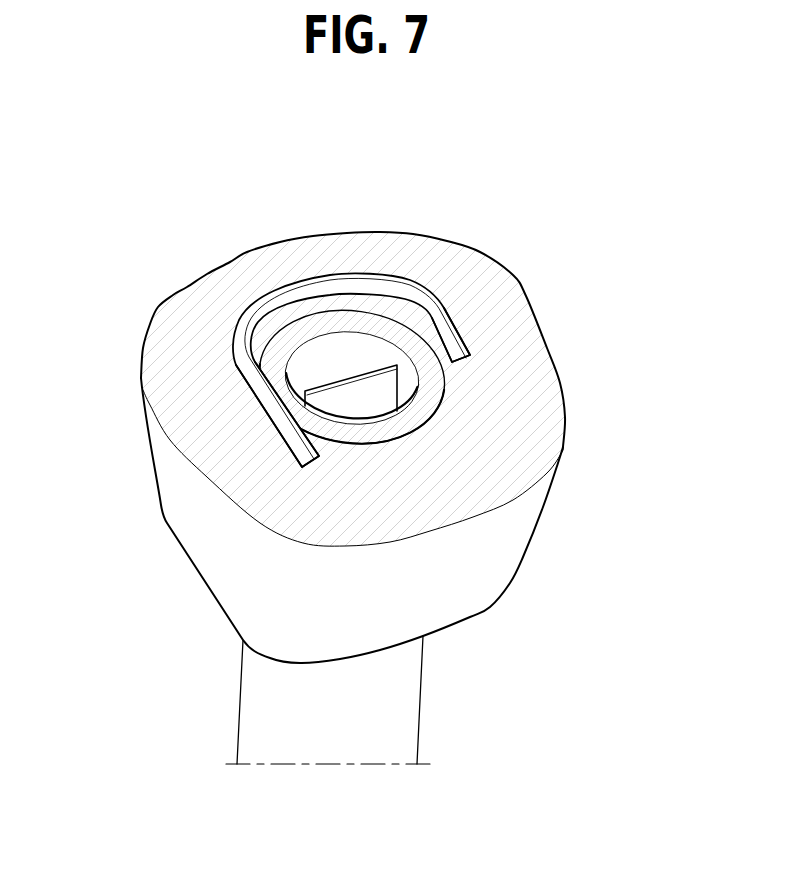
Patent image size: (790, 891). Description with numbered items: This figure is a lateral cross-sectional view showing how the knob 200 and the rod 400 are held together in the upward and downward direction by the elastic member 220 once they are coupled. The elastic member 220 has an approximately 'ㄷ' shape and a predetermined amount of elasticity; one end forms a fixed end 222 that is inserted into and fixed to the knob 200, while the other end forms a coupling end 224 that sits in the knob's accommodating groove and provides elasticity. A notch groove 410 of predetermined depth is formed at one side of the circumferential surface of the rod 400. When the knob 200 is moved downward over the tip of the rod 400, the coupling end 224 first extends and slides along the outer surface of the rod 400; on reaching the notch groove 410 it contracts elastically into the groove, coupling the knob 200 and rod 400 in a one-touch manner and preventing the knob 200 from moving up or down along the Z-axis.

The knob 200 is at (575, 378).
The elastic member 220 is at (308, 272).
The fixed end 222 is at (405, 297).
The coupling end 224 is at (257, 380).
The rod 400 is at (417, 350).
The notch groove 410 is at (288, 407).